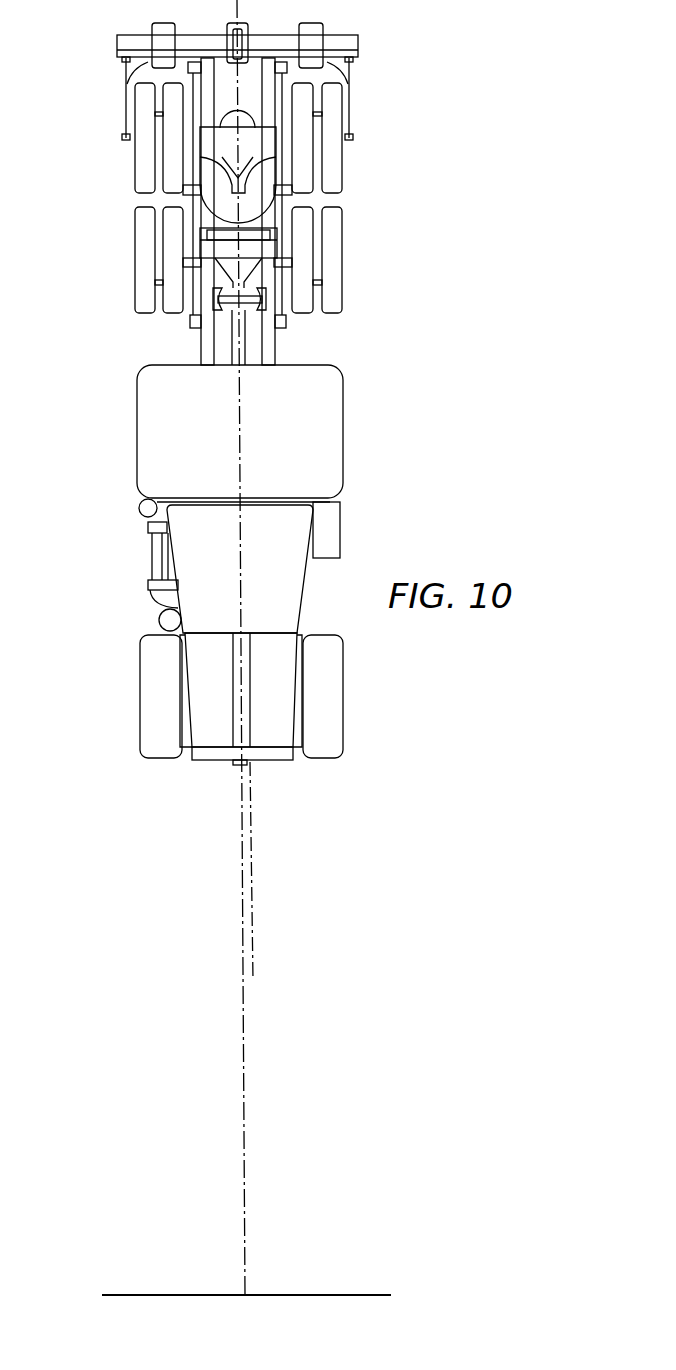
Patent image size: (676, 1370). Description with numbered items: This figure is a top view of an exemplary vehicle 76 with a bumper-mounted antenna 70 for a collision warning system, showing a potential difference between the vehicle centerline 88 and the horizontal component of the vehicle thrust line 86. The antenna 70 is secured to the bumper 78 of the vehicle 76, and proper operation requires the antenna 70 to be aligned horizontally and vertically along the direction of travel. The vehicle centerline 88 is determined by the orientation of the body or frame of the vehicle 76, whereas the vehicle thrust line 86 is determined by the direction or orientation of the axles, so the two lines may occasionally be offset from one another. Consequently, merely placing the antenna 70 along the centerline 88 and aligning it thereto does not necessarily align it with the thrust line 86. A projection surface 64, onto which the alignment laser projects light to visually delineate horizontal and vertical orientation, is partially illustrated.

The projection surface 64 is at (322, 1295).
The antenna 70 is at (235, 763).
The vehicle 76 is at (88, 406).
The bumper 78 is at (268, 762).
The vehicle thrust line 86 is at (252, 908).
The vehicle centerline 88 is at (244, 1130).